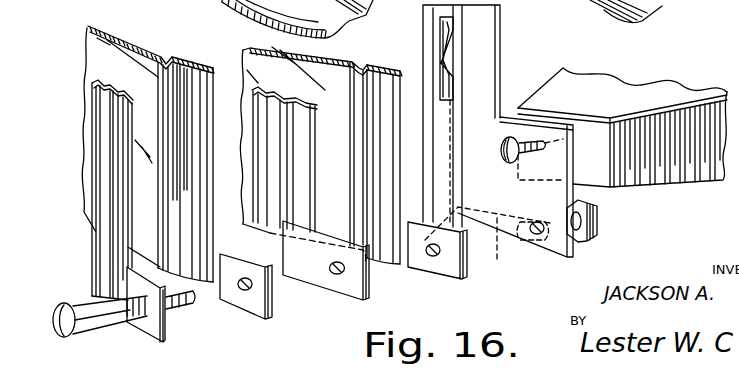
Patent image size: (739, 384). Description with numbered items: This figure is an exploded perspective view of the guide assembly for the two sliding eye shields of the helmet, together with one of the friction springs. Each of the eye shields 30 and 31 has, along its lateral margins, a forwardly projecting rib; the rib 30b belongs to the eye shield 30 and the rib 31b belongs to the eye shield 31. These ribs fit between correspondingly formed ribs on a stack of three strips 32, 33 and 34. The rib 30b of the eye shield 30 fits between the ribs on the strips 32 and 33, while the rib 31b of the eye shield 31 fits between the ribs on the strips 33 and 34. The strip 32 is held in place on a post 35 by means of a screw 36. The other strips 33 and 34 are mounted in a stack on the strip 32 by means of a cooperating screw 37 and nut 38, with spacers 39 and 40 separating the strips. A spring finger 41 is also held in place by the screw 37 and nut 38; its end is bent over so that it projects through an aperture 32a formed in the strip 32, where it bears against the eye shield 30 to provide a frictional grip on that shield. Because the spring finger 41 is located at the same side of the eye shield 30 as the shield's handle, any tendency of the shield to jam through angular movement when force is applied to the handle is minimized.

The eye shield 30 is at (255, 57).
The rib 30b is at (368, 68).
The eye shield 31 is at (143, 37).
The rib 31b is at (172, 58).
The strip 32 is at (485, 47).
The aperture 32a is at (453, 23).
The strip 33 is at (307, 270).
The strip 34 is at (95, 234).
The post 35 is at (683, 87).
The screw 36 is at (507, 133).
The screw 37 is at (88, 322).
The nut 38 is at (600, 222).
The spacer 39 is at (232, 299).
The spacer 40 is at (423, 262).
The spring finger 41 is at (487, 246).